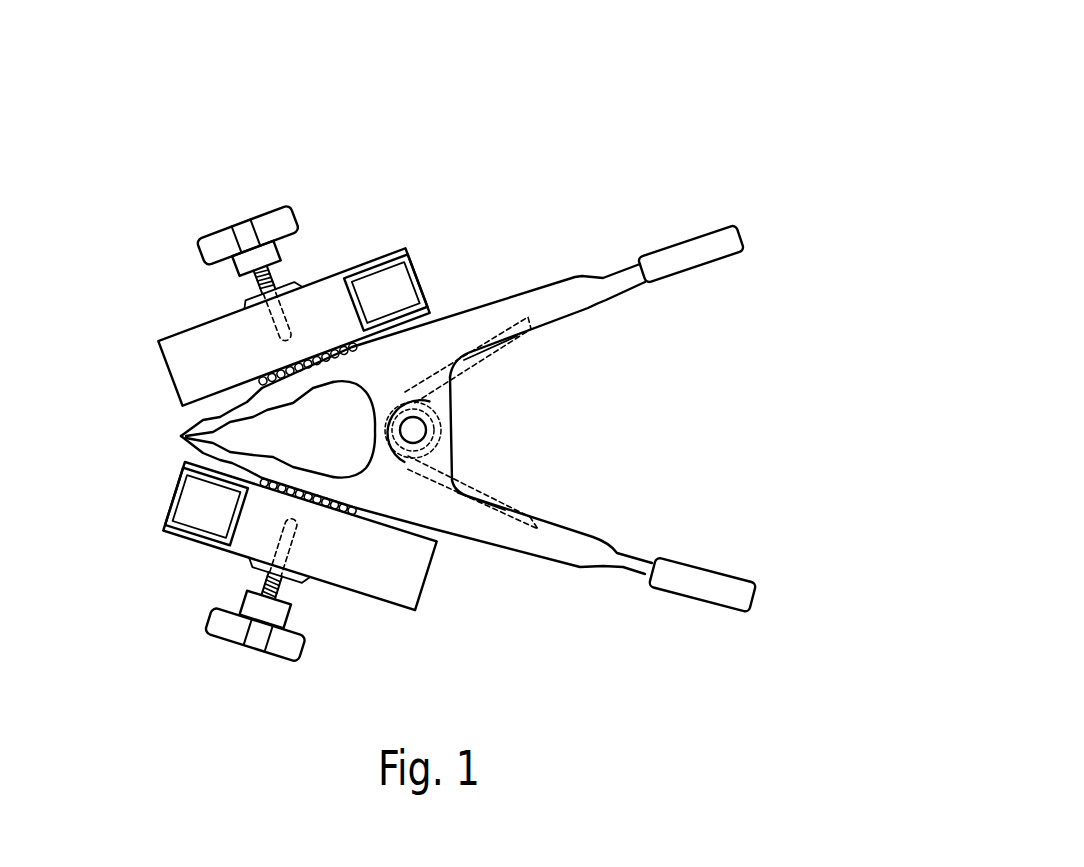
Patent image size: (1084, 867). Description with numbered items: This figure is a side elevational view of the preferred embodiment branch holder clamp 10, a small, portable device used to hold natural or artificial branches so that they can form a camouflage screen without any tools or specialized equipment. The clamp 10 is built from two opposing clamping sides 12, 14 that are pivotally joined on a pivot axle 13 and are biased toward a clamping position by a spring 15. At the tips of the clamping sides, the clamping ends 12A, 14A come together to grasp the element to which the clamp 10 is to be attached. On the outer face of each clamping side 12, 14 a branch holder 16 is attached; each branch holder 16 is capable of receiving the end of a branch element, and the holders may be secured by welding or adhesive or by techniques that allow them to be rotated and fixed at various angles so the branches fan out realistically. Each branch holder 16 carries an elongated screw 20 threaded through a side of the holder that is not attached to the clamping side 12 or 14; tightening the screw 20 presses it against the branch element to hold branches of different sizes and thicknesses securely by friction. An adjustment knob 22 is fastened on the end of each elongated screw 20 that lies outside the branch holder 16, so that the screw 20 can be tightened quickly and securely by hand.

The branch holder clamp 10 is at (680, 122).
The clamping side 12 is at (542, 284).
The clamping end 12A is at (183, 430).
The pivot axle 13 is at (415, 428).
The clamping side 14 is at (533, 557).
The clamping end 14A is at (182, 442).
The spring 15 is at (472, 358).
The branch holder 16 is at (420, 272).
The elongated screw 20 is at (272, 274).
The adjustment knob 22 is at (245, 221).